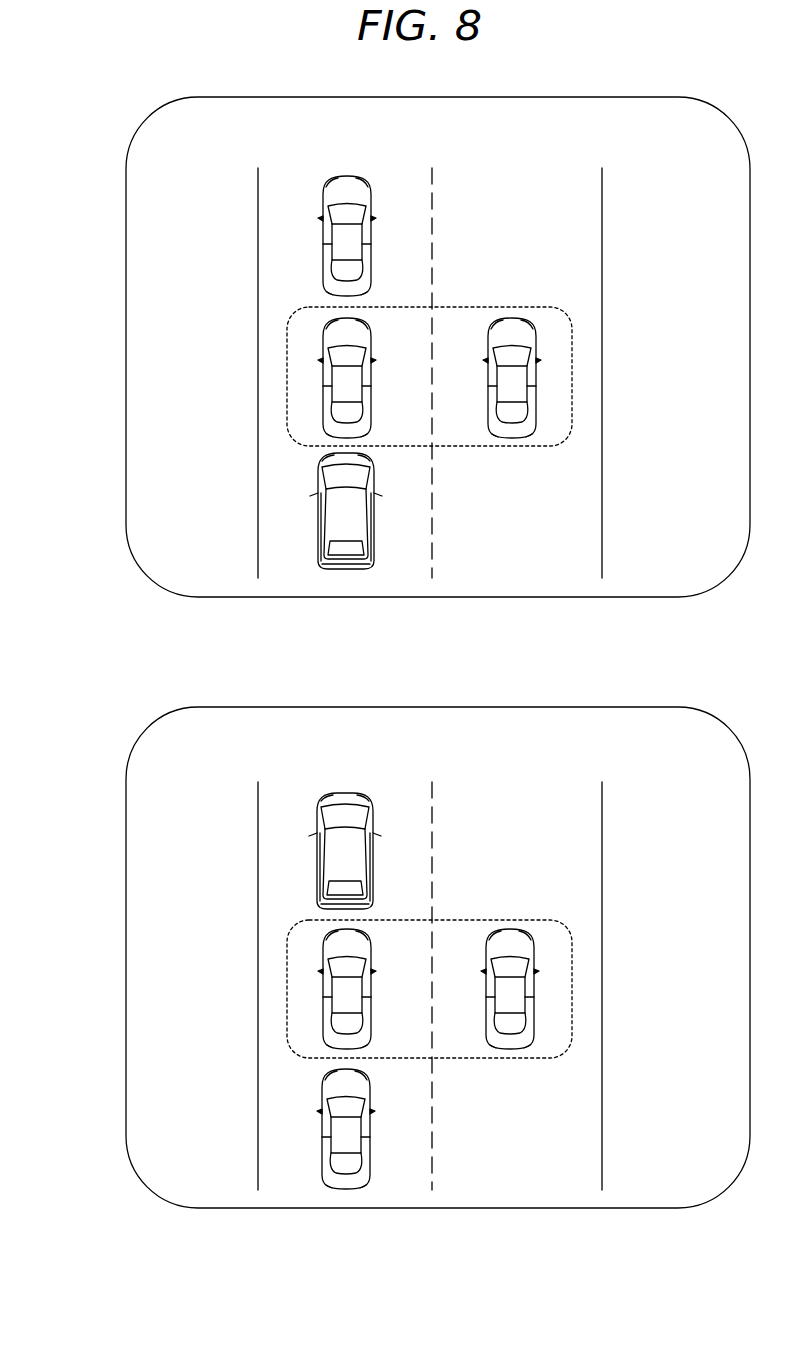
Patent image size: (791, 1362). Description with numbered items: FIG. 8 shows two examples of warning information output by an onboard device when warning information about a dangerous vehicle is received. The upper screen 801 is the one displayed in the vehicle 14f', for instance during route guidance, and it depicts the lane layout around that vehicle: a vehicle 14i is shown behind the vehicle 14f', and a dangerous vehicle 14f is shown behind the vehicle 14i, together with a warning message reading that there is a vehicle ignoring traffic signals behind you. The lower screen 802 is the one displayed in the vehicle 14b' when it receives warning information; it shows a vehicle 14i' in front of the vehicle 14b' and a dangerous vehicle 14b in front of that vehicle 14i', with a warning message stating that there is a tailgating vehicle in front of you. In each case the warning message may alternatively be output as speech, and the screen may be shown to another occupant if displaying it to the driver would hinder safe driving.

The screen 801 is at (143, 120).
The screen 802 is at (142, 735).
The dangerous vehicle 14f is at (326, 511).
The vehicle 14f' is at (323, 236).
The vehicle 14i is at (384, 376).
The dangerous vehicle 14b is at (323, 851).
The vehicle 14b' is at (323, 1129).
The vehicle 14i' is at (383, 989).